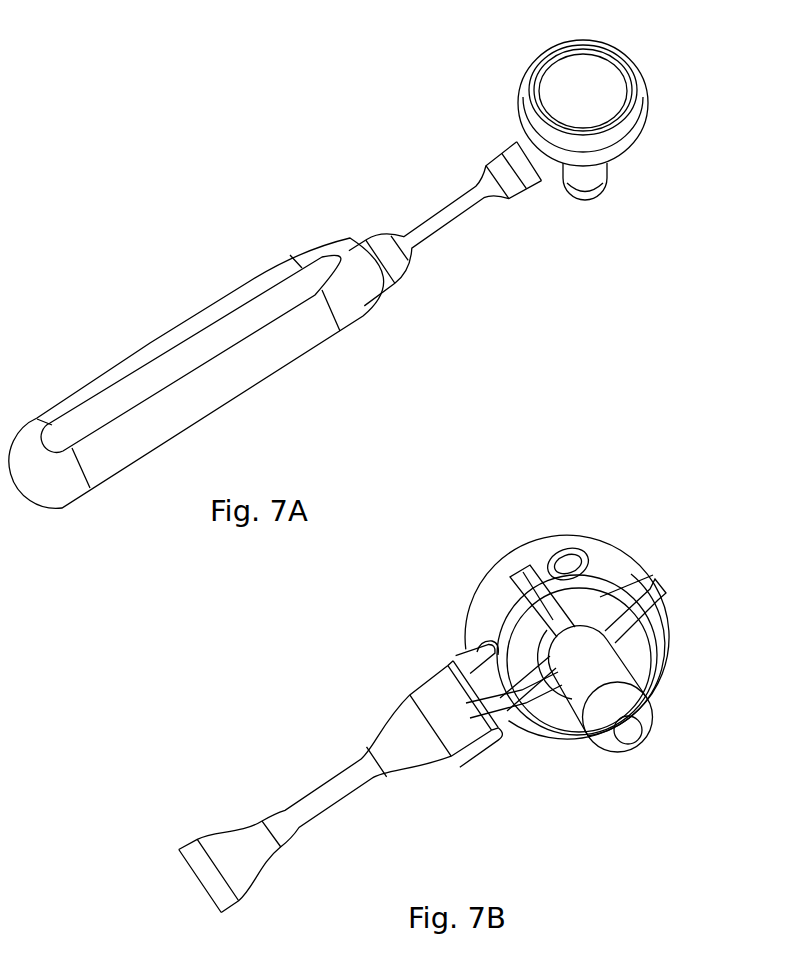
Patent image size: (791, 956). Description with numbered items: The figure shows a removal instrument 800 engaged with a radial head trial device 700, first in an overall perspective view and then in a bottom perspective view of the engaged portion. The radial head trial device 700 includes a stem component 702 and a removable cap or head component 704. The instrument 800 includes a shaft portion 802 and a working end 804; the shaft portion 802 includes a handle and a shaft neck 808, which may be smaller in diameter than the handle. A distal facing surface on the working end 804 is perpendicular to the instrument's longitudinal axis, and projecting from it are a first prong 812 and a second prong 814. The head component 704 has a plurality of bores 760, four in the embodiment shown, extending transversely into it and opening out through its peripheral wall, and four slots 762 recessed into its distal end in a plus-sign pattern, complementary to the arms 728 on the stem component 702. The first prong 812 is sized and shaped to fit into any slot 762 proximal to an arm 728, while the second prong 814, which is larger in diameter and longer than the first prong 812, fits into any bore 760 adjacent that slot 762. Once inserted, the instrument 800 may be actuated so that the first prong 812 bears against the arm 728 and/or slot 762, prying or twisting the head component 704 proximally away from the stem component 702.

In FIG. 7A, the radial head trial device 700 is at (667, 74).
In FIG. 7A, the stem component 702 is at (603, 178).
In FIG. 7B, the stem component 702 is at (570, 742).
In FIG. 7A, the head component 704 is at (590, 72).
In FIG. 7B, the head component 704 is at (490, 598).
In FIG. 7B, the arm 728 is at (627, 590).
In FIG. 7B, the bore 760 is at (566, 566).
In FIG. 7B, the slot 762 is at (528, 582).
In FIG. 7A, the instrument 800 is at (239, 154).
In FIG. 7A, the shaft portion 802 is at (367, 350).
In FIG. 7A, the working end 804 is at (555, 185).
In FIG. 7B, the shaft neck 808 is at (323, 787).
In FIG. 7B, the first prong 812 is at (488, 742).
In FIG. 7B, the second prong 814 is at (462, 667).